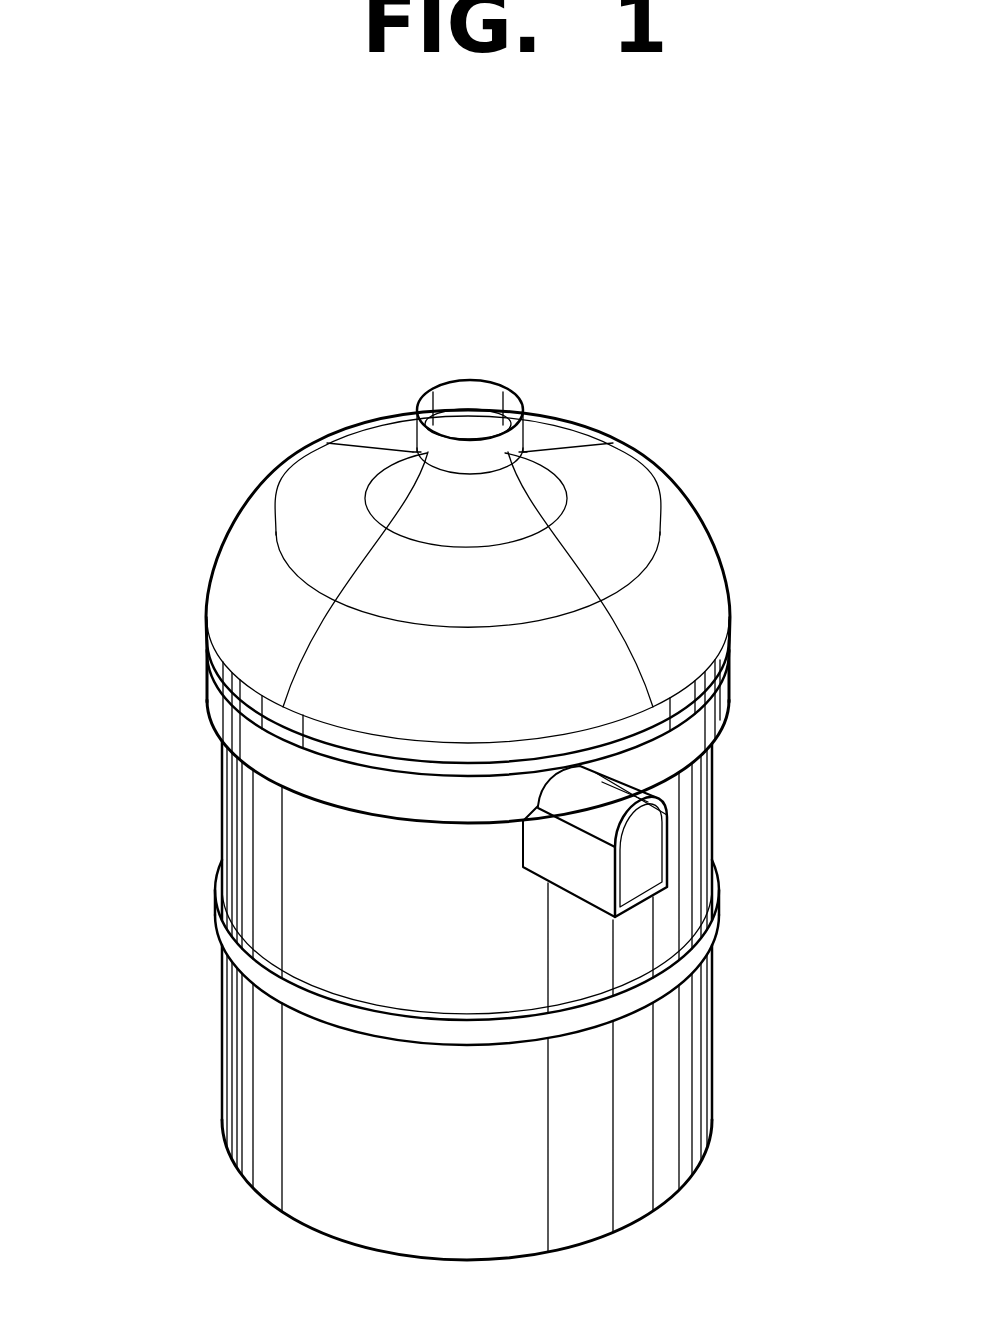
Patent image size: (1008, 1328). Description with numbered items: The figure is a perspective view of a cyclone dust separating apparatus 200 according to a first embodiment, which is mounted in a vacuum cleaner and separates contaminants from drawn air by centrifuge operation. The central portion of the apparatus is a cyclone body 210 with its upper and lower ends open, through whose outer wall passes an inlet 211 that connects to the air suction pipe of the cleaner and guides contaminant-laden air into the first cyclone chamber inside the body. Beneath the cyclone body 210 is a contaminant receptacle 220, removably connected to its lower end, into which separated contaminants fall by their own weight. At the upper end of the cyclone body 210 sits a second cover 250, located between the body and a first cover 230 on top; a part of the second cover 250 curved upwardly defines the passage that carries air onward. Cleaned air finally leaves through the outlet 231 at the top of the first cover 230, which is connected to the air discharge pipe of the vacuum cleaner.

The cyclone dust separating apparatus 200 is at (328, 269).
The cyclone body 210 is at (233, 822).
The inlet 211 is at (648, 793).
The contaminant receptacle 220 is at (240, 1057).
The first cover 230 is at (243, 551).
The outlet 231 is at (488, 398).
The second cover 250 is at (207, 692).